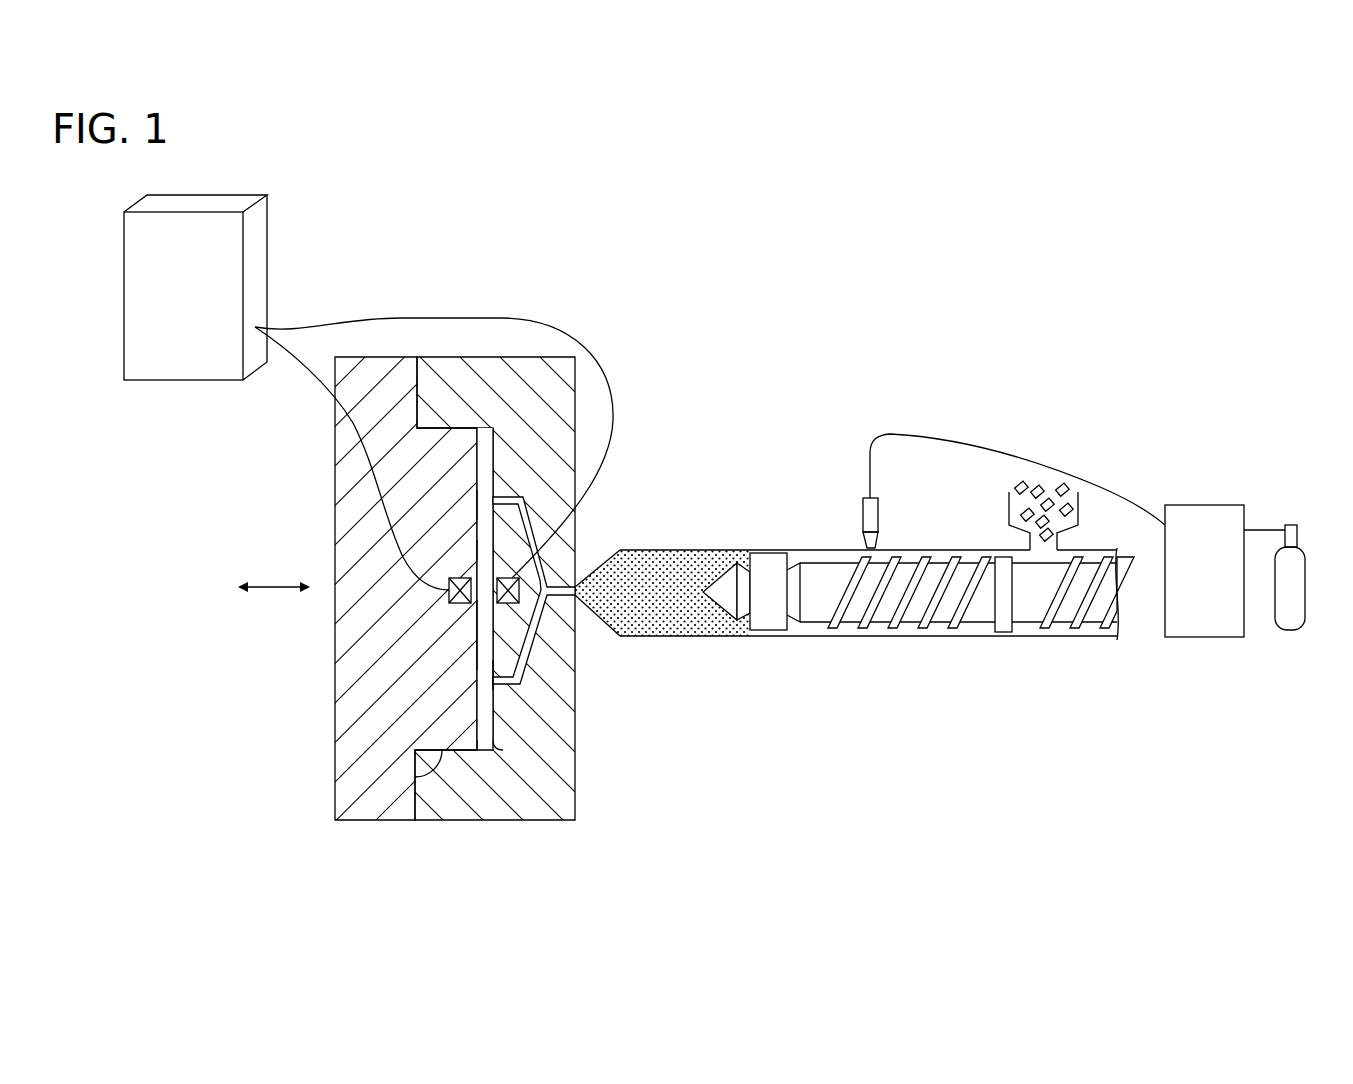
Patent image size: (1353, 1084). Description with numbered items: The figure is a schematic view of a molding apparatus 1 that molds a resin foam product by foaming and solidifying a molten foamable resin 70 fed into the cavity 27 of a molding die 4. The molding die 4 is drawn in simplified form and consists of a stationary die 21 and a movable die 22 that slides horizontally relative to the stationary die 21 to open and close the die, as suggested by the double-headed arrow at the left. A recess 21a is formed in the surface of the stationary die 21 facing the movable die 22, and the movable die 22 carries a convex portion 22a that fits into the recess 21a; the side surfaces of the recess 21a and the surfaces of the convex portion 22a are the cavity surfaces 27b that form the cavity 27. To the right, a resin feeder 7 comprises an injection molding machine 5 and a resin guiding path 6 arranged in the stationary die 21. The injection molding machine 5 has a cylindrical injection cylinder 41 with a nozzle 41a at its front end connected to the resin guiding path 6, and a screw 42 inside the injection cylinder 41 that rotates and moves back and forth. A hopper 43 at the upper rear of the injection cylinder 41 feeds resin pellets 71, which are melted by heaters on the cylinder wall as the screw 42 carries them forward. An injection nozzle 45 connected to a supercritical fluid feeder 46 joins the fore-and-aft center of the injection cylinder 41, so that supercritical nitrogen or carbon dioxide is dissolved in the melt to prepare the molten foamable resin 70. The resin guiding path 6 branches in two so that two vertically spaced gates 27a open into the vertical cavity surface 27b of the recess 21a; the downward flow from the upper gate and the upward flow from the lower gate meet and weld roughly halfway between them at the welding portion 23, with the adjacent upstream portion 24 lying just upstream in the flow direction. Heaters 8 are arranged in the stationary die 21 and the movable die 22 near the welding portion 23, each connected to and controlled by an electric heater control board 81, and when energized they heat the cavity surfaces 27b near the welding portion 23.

The molding apparatus 1 is at (950, 225).
The molding die 4 is at (452, 885).
The injection molding machine 5 is at (770, 549).
The resin guiding path 6 is at (585, 570).
The resin feeder 7 is at (712, 485).
The heaters 8 is at (457, 603).
The stationary die 21 is at (437, 821).
The recess 21a is at (497, 748).
The movable die 22 is at (390, 821).
The convex portion 22a is at (415, 777).
The welding portion 23 is at (466, 630).
The upstream portion 24 is at (466, 545).
The cavity 27 is at (483, 720).
The gates 27a is at (478, 502).
The cavity surfaces 27b is at (463, 276).
The injection cylinder 41 is at (834, 637).
The nozzle 41a is at (601, 620).
The screw 42 is at (907, 626).
The hopper 43 is at (1009, 510).
The injection nozzle 45 is at (863, 512).
The supercritical fluid feeder 46 is at (1236, 467).
The molten foamable resin 70 is at (685, 612).
The resin pellets 71 is at (1015, 486).
The electric heater control board 81 is at (180, 381).